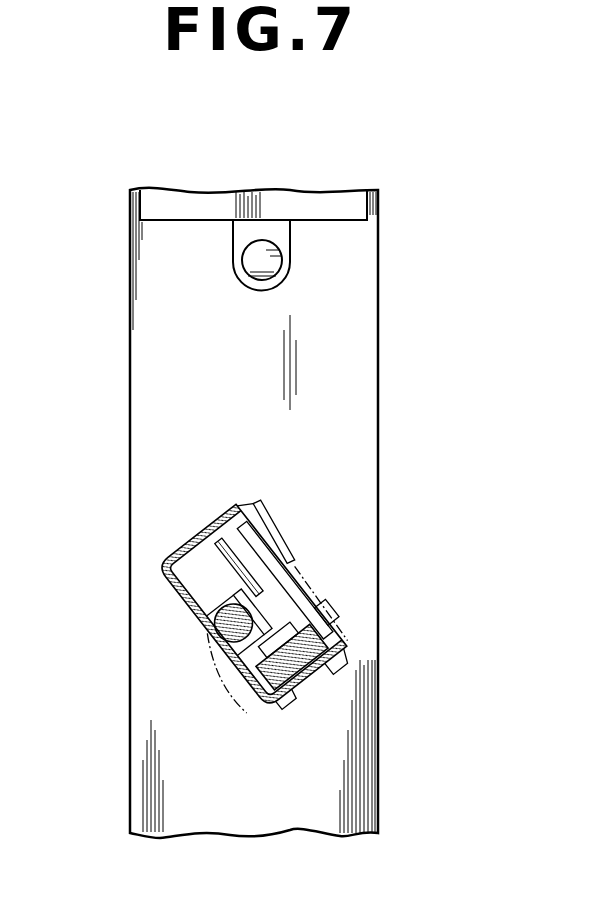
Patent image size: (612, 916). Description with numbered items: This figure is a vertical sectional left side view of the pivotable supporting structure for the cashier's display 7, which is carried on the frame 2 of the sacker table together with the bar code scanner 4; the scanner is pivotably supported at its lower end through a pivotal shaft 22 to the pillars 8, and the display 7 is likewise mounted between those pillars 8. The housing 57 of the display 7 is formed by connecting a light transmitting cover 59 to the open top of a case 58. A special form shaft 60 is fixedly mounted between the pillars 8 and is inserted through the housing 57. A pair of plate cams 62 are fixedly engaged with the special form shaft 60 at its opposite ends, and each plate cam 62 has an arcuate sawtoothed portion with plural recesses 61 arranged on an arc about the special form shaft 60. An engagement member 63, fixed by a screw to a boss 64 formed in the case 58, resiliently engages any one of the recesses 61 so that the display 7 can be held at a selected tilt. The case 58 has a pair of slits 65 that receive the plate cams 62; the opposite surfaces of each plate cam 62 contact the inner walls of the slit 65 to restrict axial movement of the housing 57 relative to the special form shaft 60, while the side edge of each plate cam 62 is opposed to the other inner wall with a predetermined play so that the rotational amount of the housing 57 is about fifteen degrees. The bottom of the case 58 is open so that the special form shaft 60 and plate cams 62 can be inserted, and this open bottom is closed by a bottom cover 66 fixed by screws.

The frame 2 is at (353, 310).
The bar code scanner 4 is at (143, 203).
The display 7 is at (197, 527).
The pillars 8 is at (353, 405).
The pivotal shaft 22 is at (247, 260).
The housing 57 is at (173, 542).
The case 58 is at (160, 567).
The light transmitting cover 59 is at (265, 496).
The special form shaft 60 is at (210, 645).
The recesses 61 is at (325, 602).
The plate cams 62 is at (297, 563).
The engagement member 63 is at (337, 612).
The boss 64 is at (300, 683).
The slits 65 is at (305, 688).
The bottom cover 66 is at (220, 665).